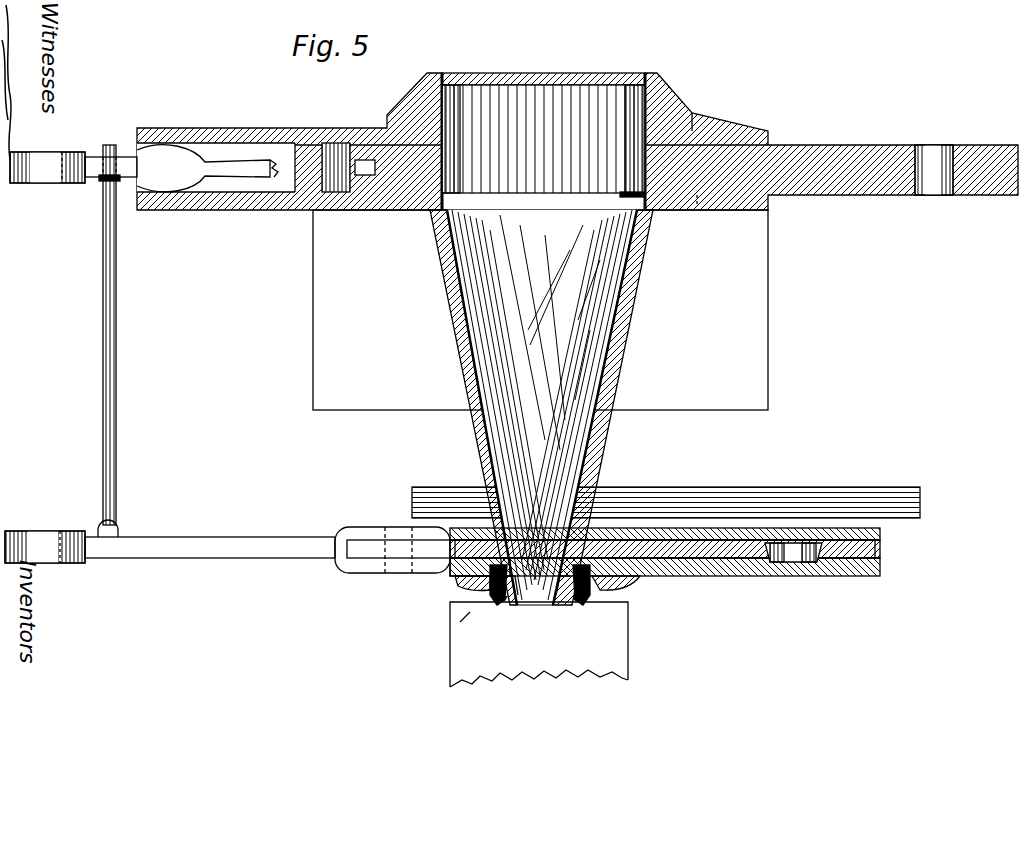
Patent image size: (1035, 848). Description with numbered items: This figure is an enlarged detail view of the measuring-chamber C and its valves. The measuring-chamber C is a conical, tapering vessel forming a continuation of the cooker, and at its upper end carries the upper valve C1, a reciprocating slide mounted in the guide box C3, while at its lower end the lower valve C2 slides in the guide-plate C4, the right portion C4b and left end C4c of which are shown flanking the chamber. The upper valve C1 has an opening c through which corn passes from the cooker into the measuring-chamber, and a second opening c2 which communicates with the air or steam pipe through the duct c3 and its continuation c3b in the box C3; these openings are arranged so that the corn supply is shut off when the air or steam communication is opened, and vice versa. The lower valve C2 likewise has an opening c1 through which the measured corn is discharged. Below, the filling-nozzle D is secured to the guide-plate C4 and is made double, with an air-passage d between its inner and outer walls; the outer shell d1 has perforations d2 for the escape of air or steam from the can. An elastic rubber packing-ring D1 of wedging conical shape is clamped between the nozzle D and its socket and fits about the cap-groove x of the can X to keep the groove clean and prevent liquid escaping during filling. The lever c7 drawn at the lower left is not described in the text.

The measuring-chamber C is at (602, 223).
The upper valve C1 is at (446, 176).
The opening in upper valve c is at (543, 139).
The lower guide box C4 is at (216, 167).
The upper guide box C3 is at (282, 196).
The duct or passage c3 is at (624, 200).
The duct or passage c3b is at (698, 212).
The opening in upper valve c2 is at (940, 146).
The lower lever rod c7 is at (227, 550).
The lower valve C2 is at (853, 560).
The lower guide box C4b is at (630, 528).
The lower guide box C4c is at (462, 578).
The opening in lower valve c1 is at (793, 552).
The filling-nozzle D is at (547, 582).
The packing-ring D1 is at (478, 600).
The outer shell of nozzle d1 is at (496, 604).
The perforations d2 is at (506, 603).
The air-passage d is at (518, 606).
The cap-groove x is at (480, 615).
The can X is at (539, 644).